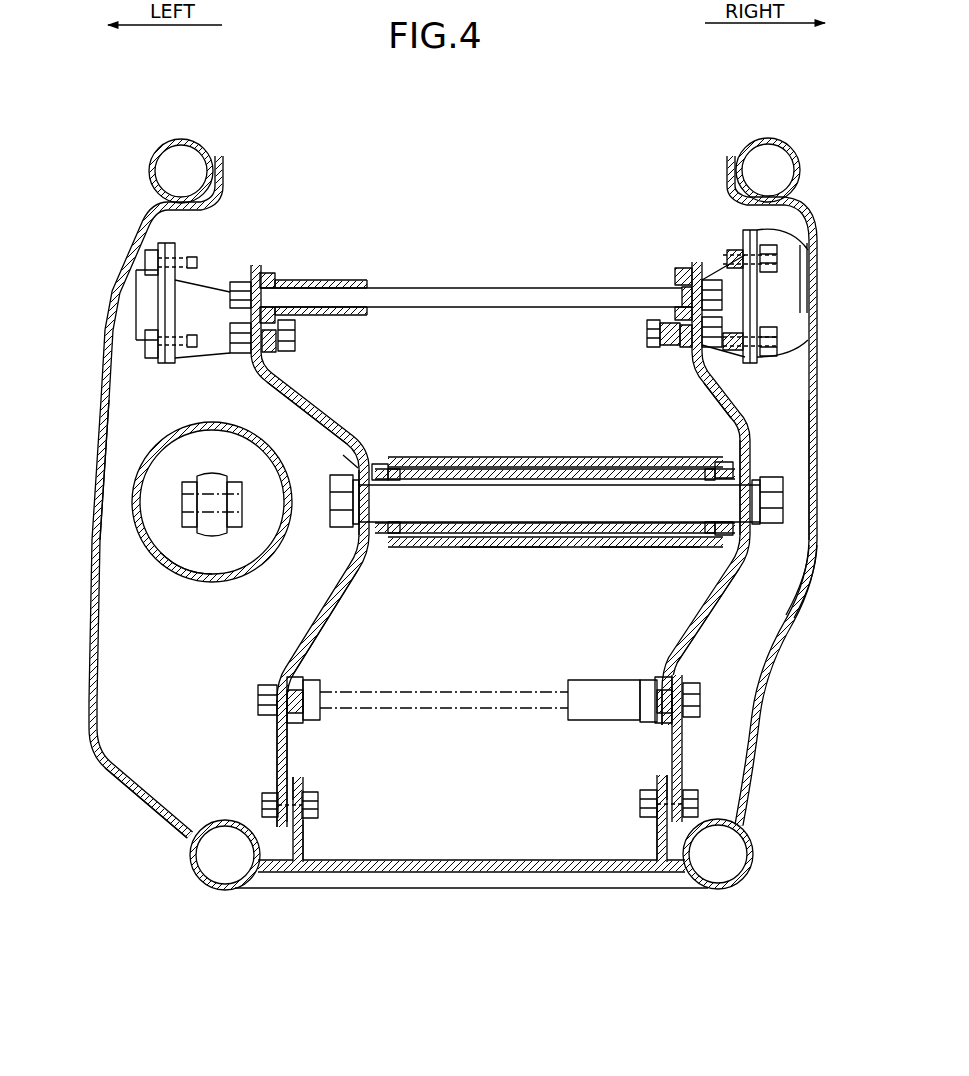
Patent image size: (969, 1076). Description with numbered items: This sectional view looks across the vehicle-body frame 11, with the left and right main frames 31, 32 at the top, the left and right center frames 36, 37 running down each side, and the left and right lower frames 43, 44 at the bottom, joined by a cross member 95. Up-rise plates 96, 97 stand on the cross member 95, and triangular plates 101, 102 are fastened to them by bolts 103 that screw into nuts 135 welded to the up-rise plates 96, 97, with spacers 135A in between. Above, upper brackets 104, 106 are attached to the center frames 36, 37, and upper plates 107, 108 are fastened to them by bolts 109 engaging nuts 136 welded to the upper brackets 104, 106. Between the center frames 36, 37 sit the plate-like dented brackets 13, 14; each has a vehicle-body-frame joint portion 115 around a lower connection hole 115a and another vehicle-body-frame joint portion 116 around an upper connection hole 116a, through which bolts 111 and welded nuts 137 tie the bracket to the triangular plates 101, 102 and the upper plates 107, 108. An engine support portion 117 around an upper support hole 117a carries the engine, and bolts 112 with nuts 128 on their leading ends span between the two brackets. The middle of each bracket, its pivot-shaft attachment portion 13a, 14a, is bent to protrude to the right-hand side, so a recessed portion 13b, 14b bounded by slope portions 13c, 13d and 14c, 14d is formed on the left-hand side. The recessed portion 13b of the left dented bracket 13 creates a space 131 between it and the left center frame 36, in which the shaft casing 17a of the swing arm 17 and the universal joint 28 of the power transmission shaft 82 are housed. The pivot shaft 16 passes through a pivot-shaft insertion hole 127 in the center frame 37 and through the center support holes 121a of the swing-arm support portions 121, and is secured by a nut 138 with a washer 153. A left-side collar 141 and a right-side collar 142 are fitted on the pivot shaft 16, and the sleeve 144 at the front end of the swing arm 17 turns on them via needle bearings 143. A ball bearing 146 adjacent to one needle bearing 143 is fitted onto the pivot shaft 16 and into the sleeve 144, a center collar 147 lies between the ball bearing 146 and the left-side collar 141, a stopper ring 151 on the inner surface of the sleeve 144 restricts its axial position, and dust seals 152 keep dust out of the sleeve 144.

The vehicle-body frame 11 is at (108, 778).
The dented bracket 13 is at (362, 596).
The pivot-shaft attachment portion 13a is at (352, 548).
The recessed portion 13b is at (275, 415).
The slope portion 13c is at (362, 435).
The slope portion 13d is at (292, 635).
The dented bracket 14 is at (725, 593).
The pivot-shaft attachment portion 14a is at (752, 550).
The recessed portion 14b is at (700, 407).
The slope portion 14c is at (748, 422).
The slope portion 14d is at (705, 592).
The pivot shaft 16 is at (786, 500).
The swing arm 17 is at (205, 582).
The shaft casing 17a is at (155, 562).
The universal joint 28 is at (205, 475).
The main frame 31 is at (163, 147).
The main frame 32 is at (790, 150).
The center frame 36 is at (96, 388).
The center frame 37 is at (820, 420).
The lower frame 43 is at (195, 870).
The lower frame 44 is at (748, 875).
The power transmission shaft 82 is at (175, 508).
The cross member 95 is at (457, 880).
The up-rise plate 96 is at (303, 858).
The up-rise plate 97 is at (657, 858).
The triangular plate 101 is at (277, 736).
The triangular plate 102 is at (672, 740).
The bolt 103 is at (262, 806).
The upper bracket 104 is at (140, 300).
The upper bracket 106 is at (785, 292).
The upper plate 107 is at (210, 293).
The upper plate 108 is at (715, 282).
The bolt 109 is at (142, 255).
The bolt 111 is at (296, 337).
The bolt 112 is at (485, 298).
The vehicle-body-frame joint portion 115 is at (280, 682).
The lower connection hole 115a is at (266, 713).
The vehicle-body-frame joint portion 116 is at (268, 292).
The upper connection hole 116a is at (257, 347).
The engine support portion 117 is at (278, 275).
The upper support hole 117a is at (290, 284).
The swing-arm support portion 121 is at (340, 535).
The center support hole 121a is at (345, 495).
The pivot-shaft insertion hole 127 is at (815, 525).
The nut 128 is at (686, 275).
The space 131 is at (117, 484).
The nut 135 is at (303, 827).
The spacer 135A is at (297, 780).
The nut 136 is at (180, 248).
The nut 137 is at (262, 348).
The nut 138 is at (338, 478).
The left-side collar 141 is at (378, 463).
The right-side collar 142 is at (705, 550).
The needle bearing 143 is at (425, 462).
The sleeve 144 is at (540, 459).
The ball bearing 146 is at (640, 546).
The center collar 147 is at (535, 549).
The stopper ring 151 is at (718, 462).
The dust seal 152 is at (395, 550).
The washer 153 is at (812, 572).